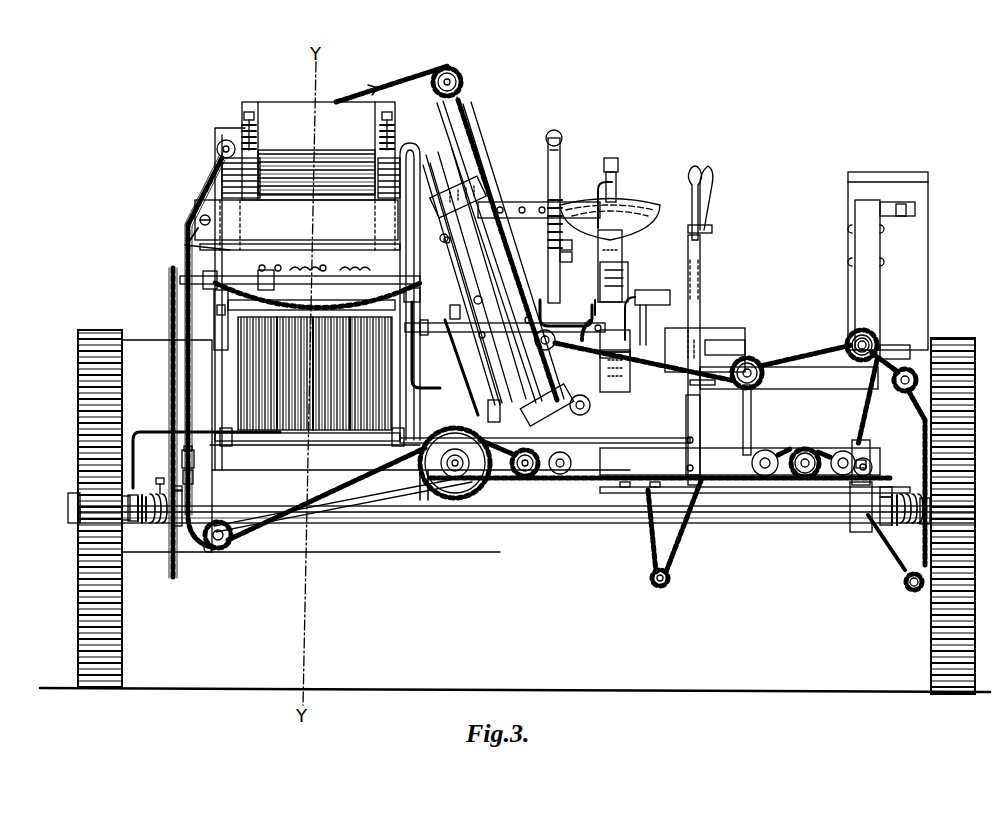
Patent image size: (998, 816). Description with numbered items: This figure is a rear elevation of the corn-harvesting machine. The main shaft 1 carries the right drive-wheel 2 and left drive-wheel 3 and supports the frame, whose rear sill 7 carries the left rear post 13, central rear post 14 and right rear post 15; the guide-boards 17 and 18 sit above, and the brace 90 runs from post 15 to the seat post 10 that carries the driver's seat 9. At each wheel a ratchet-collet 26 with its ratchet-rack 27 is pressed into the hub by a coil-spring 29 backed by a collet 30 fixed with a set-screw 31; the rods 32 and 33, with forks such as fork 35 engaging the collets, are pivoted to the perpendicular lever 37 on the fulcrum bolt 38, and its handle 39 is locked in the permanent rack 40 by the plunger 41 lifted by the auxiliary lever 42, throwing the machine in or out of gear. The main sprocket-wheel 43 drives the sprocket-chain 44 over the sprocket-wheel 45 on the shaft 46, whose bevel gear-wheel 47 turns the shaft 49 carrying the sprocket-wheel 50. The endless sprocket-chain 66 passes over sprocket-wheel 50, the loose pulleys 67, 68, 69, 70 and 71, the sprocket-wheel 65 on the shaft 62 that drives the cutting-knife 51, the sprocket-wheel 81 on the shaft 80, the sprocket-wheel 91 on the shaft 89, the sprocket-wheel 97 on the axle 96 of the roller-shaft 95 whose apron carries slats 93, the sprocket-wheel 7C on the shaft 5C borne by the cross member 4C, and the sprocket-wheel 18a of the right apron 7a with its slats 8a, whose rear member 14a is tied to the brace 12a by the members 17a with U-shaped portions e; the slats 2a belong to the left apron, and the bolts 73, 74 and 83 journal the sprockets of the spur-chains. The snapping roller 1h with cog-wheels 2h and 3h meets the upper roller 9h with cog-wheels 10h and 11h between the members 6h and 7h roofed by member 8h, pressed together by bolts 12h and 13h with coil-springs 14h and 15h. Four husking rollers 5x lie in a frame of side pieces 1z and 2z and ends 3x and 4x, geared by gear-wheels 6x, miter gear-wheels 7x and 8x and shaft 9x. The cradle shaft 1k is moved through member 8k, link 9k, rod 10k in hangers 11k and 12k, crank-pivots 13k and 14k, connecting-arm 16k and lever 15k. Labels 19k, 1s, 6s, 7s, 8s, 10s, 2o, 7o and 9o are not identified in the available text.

The main shaft 1 is at (66, 505).
The right drive-wheel 2 is at (977, 650).
The left drive-wheel 3 is at (76, 640).
The rear sill 7 is at (405, 488).
The driver's seat 9 is at (640, 202).
The seat post 10 is at (622, 246).
The left rear post 13 is at (214, 127).
The central rear post 14 is at (440, 160).
The right rear post 15 is at (872, 298).
The guide-board 17 is at (922, 216).
The guide-board 18 is at (722, 340).
The ratchet-collet 26 is at (132, 522).
The ratchet-rack 27 is at (156, 523).
The coil-spring 29 is at (880, 538).
The collet 30 is at (168, 526).
The set-screw 31 is at (160, 482).
The rod 32 is at (755, 496).
The rod 33 is at (150, 431).
The fork 35 is at (128, 522).
The perpendicular lever 37 is at (686, 406).
The bolt 38 is at (686, 467).
The handle 39 is at (690, 178).
The permanent rack 40 is at (724, 344).
The plunger 41 is at (686, 355).
The auxiliary lever 42 is at (712, 225).
The main sprocket-wheel 43 is at (178, 570).
The sprocket-chain 44 is at (172, 322).
The sprocket-wheel 45 is at (188, 485).
The shaft 46 is at (180, 459).
The bevel gear-wheel 47 is at (422, 503).
The shaft 49 is at (455, 480).
The sprocket-wheel 50 is at (468, 500).
The cuspidal cutting-knife 51 is at (858, 527).
The shaft 62 is at (222, 545).
The sprocket-wheel 65 is at (209, 553).
The endless sprocket-chain 66 is at (192, 185).
The loose pulley 67 is at (217, 148).
The loose pulley 68 is at (535, 342).
The loose pulley 69 is at (868, 460).
The loose pulley 70 is at (768, 450).
The loose pulley 71 is at (561, 475).
The bolt 73 is at (908, 390).
The bolt 74 is at (914, 497).
The shaft 80 is at (890, 328).
The sprocket-wheel 81 is at (873, 345).
The journal-bolt 83 is at (675, 542).
The shaft 89 is at (752, 366).
The brace 90 is at (808, 385).
The sprocket-wheel 91 is at (750, 358).
The slats 93 is at (653, 437).
The roller-shaft 95 is at (636, 491).
The axle 96 is at (838, 452).
The sprocket-wheel 97 is at (803, 450).
The side piece 1z is at (376, 446).
The side piece 2z is at (347, 553).
The cross member 4C is at (296, 225).
The shaft 5C is at (195, 232).
The sprocket-wheel 7C is at (199, 219).
The roller 1h is at (322, 255).
The cog-wheel 3h is at (186, 246).
The member 6h is at (241, 178).
The member 7h is at (389, 178).
The member 8h is at (298, 107).
The roller 9h is at (330, 190).
The cog-wheel 10h is at (412, 145).
The cog-wheel 11h is at (218, 167).
The bolt 12h is at (382, 125).
The bolt 13h is at (262, 125).
The coil-spring 14h is at (379, 134).
The coil-spring 15h is at (258, 135).
The cradle shaft 1k is at (152, 296).
The member 8k is at (420, 300).
The link 9k is at (200, 280).
The rod 10k is at (455, 400).
The hanger 11k is at (517, 341).
The hanger 12k is at (455, 322).
The crank-pivot 13k is at (620, 330).
The crank-pivot 14k is at (416, 336).
The lever 15k is at (540, 262).
The connecting-arm 16k is at (602, 300).
The chain 19k is at (622, 398).
The upper end 3x is at (311, 309).
The lower end 4x is at (268, 441).
The rollers 5x is at (238, 374).
The gear-wheels 6x is at (148, 311).
The miter gear-wheel 7x is at (258, 260).
The miter gear-wheel 8x is at (280, 260).
The shaft 9x is at (328, 258).
The slats 2a is at (486, 304).
The cog-wheel 2h is at (455, 243).
The right apron 7a is at (490, 153).
The slats 8a is at (497, 170).
The brace 12a is at (488, 420).
The rear member 14a is at (472, 115).
The member 17a is at (500, 190).
The sprocket-wheel 18a is at (462, 80).
The U-shaped portions e is at (502, 300).
The spring rod 1s is at (561, 148).
The spring 6s is at (562, 194).
The eye 7s is at (548, 145).
The bracket 8s is at (576, 254).
The bracket 10s is at (580, 240).
The seat bracket 2o is at (596, 182).
The post cap 7o is at (611, 157).
The pipe 9o is at (640, 318).